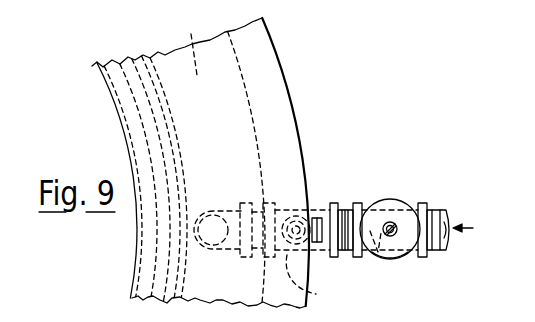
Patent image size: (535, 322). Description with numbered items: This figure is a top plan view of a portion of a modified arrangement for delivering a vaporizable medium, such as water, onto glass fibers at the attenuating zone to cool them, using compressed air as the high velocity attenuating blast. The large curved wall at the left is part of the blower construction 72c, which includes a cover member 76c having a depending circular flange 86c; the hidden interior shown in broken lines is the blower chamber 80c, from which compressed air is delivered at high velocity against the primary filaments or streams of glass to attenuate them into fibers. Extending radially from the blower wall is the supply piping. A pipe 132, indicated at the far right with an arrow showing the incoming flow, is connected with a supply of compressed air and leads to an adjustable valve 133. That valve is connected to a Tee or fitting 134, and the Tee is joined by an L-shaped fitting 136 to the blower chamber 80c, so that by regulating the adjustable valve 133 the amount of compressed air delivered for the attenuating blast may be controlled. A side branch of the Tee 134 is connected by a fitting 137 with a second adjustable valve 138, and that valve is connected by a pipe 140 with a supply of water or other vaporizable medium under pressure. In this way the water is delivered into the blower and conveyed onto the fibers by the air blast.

The blower construction 72c is at (292, 71).
The cover member 76c is at (268, 50).
The blower chamber 80c is at (191, 33).
The depending circular flange 86c is at (123, 122).
The L-shaped fitting 136 is at (220, 207).
The Tee or fitting 134 is at (352, 176).
The adjustable valve 133 is at (407, 200).
The pipe 132 is at (457, 185).
The adjustable valve 138 is at (308, 252).
The fitting 137 is at (323, 283).
The pipe 140 is at (382, 257).